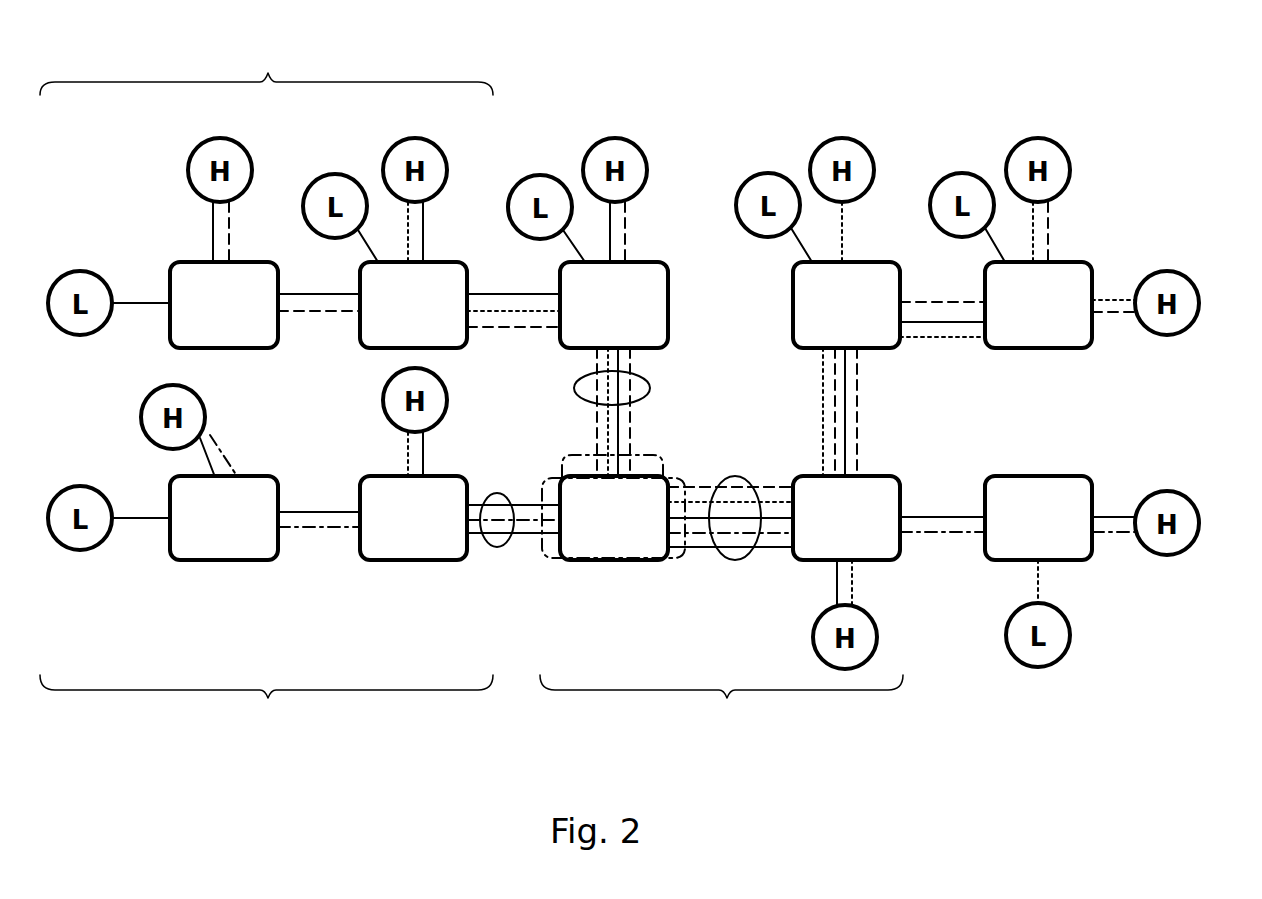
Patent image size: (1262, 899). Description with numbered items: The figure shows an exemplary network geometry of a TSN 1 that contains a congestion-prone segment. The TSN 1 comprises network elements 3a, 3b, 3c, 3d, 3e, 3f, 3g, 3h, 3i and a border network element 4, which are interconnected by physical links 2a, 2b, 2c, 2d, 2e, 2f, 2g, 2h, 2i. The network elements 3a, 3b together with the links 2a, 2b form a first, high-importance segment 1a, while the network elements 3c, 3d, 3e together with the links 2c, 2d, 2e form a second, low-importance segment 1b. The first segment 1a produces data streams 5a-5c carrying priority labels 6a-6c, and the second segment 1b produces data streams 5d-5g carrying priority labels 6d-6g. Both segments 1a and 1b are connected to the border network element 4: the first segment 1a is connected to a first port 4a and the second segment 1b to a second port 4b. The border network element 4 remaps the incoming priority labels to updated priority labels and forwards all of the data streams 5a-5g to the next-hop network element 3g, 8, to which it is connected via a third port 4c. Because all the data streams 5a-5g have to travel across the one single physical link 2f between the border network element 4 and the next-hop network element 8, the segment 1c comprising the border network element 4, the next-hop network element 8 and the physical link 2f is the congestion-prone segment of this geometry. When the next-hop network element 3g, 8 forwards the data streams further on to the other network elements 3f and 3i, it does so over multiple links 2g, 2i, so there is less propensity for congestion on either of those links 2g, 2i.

The TSN 1 is at (1100, 123).
The first, high-importance segment 1a is at (155, 690).
The second, low-importance segment 1b is at (377, 82).
The congestion-prone segment 1c is at (860, 690).
The physical link 2a is at (340, 512).
The physical link 2b is at (535, 505).
The physical link 2c is at (330, 294).
The physical link 2d is at (521, 294).
The physical link 2e is at (618, 420).
The physical link 2f is at (777, 520).
The link 2g is at (822, 416).
The physical link 2h is at (947, 322).
The link 2i is at (933, 517).
The network element 3a is at (235, 562).
The network element 3b is at (380, 562).
The network element 3c is at (243, 262).
The network element 3d is at (437, 262).
The network element 3e is at (642, 262).
The network element 3f is at (865, 262).
The next-hop network element 3g is at (884, 557).
The network element 3h is at (1076, 262).
The network element 3i is at (1073, 561).
The border network element 4 is at (632, 561).
The first port 4a is at (553, 558).
The second port 4b is at (572, 455).
The third port 4c is at (684, 557).
The next-hop network element 8 is at (893, 561).
The data streams 5a-5c is at (481, 564).
The priority labels 6a-6c is at (497, 547).
The data streams 5d-5g is at (694, 247).
The priority labels 6d-6g is at (650, 385).
The data streams 5a-5g is at (720, 623).